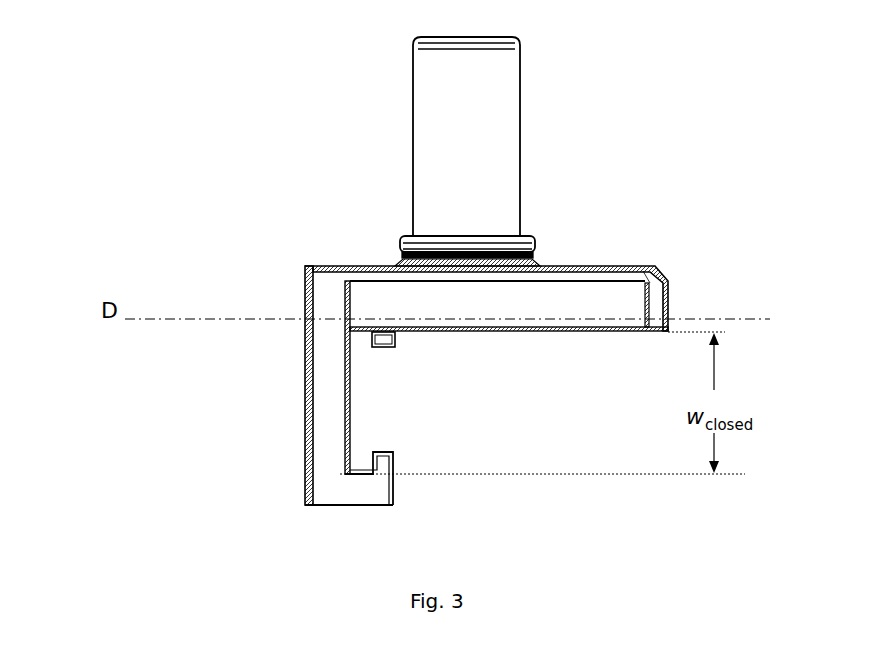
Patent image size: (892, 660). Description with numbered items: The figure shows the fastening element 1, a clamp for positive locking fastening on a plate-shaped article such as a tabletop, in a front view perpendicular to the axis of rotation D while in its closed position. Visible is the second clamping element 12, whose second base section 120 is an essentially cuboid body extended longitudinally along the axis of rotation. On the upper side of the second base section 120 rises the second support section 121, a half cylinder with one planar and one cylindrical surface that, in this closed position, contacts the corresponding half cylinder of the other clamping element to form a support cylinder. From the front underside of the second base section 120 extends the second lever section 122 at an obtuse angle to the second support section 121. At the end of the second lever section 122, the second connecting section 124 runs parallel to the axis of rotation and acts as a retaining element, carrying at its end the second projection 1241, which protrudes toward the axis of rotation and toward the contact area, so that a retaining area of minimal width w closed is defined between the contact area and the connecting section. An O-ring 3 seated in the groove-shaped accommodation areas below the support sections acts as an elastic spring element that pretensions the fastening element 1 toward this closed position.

The fastening element 1 is at (348, 196).
The second clamping element 12 is at (303, 251).
The second support section 121 is at (490, 100).
The O-ring 3 is at (535, 252).
The second base section 120 is at (573, 292).
The second lever section 122 is at (327, 384).
The second connecting section 124 is at (368, 495).
The second projection 1241 is at (388, 463).